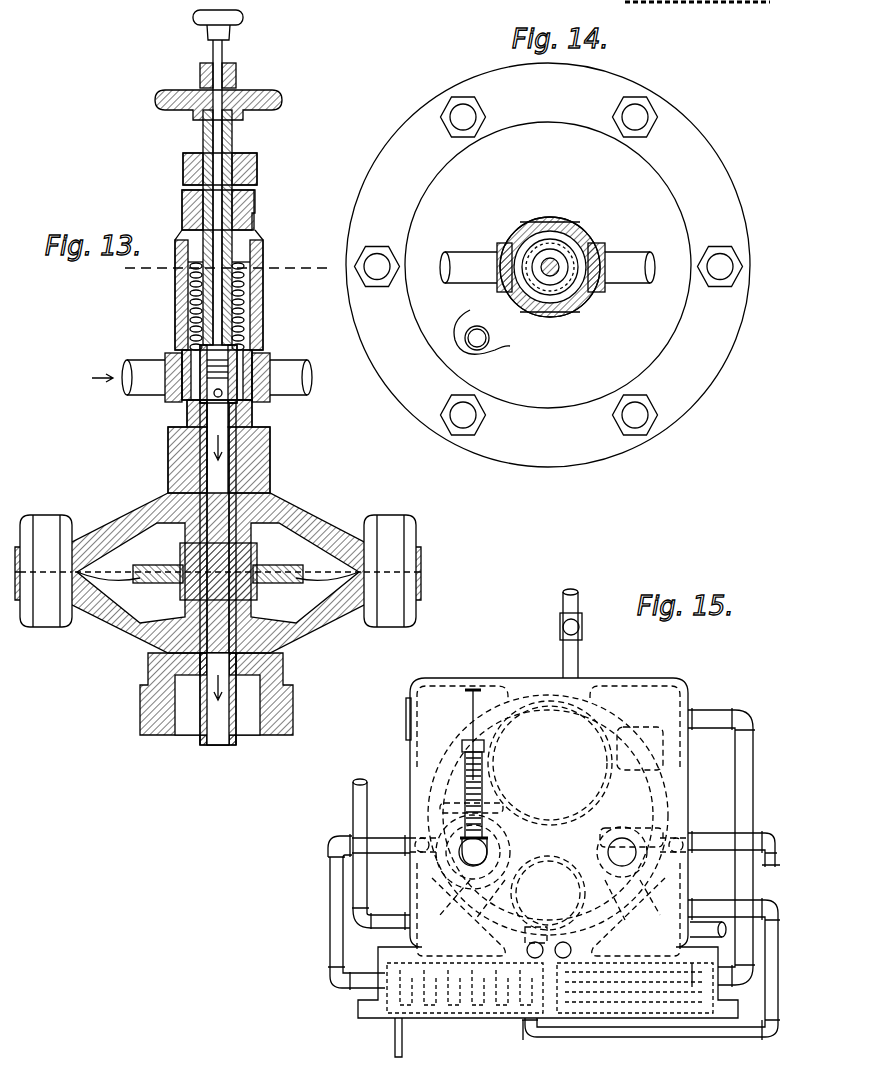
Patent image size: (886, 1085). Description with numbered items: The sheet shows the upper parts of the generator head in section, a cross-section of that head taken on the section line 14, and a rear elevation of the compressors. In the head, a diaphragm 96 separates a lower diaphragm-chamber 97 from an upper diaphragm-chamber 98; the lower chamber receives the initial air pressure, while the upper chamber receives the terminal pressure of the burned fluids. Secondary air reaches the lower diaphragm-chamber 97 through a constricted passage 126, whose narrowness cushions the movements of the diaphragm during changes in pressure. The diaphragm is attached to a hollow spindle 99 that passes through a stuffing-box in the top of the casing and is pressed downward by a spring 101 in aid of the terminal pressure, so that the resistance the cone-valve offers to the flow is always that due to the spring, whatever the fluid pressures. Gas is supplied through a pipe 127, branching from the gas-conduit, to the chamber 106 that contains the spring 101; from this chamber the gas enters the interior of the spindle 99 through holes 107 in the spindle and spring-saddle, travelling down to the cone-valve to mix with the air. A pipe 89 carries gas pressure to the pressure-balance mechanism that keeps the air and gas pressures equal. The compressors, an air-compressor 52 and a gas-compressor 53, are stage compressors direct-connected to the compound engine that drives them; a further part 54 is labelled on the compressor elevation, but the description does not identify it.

In FIG. 13, the section line 14 is at (142, 293).
In FIG. 15, the air-compressor 52 is at (592, 792).
In FIG. 15, the gas-compressor 53 is at (548, 893).
In FIG. 15, the pump 54 is at (465, 792).
In FIG. 13, the pipe 89 is at (290, 366).
In FIG. 14, the pipe 89 is at (627, 256).
In FIG. 13, the diaphragm 96 is at (313, 566).
In FIG. 13, the lower diaphragm-chamber 97 is at (296, 604).
In FIG. 13, the upper diaphragm-chamber 98 is at (273, 533).
In FIG. 13, the hollow spindle 99 is at (267, 409).
In FIG. 13, the spring 101 is at (185, 298).
In FIG. 14, the spring 101 is at (552, 303).
In FIG. 13, the chamber 106 is at (192, 331).
In FIG. 14, the chamber 106 is at (543, 233).
In FIG. 13, the holes 107 is at (182, 398).
In FIG. 13, the constricted passage 126 is at (200, 657).
In FIG. 13, the pipe 127 is at (136, 386).
In FIG. 14, the pipe 127 is at (461, 256).